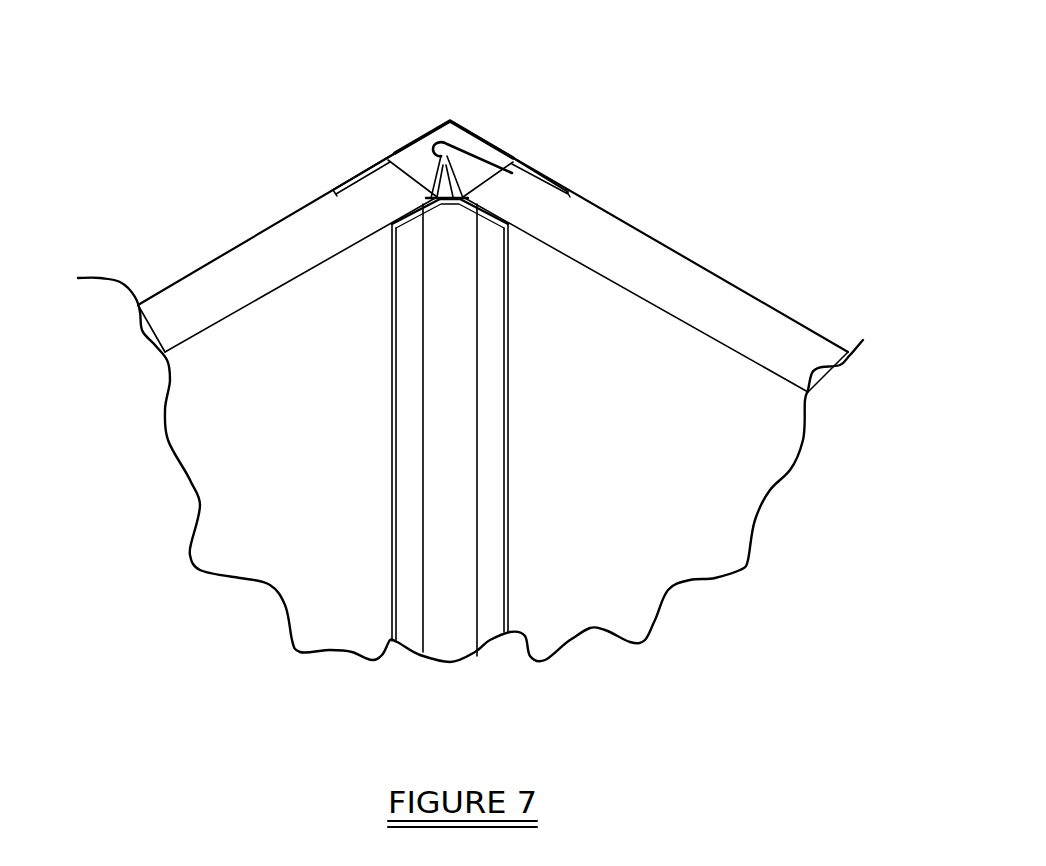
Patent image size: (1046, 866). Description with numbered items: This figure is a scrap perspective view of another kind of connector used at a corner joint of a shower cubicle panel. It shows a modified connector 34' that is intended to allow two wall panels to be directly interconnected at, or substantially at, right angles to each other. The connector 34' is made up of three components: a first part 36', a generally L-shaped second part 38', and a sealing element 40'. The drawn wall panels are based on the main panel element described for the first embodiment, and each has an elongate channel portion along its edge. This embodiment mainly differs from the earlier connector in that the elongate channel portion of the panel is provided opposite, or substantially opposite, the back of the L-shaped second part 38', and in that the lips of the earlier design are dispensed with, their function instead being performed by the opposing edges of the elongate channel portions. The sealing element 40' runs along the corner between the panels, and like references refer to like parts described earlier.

The connector 34' is at (454, 103).
The first part 36' is at (557, 124).
The second part 38' is at (366, 110).
The sealing element 40' is at (538, 427).